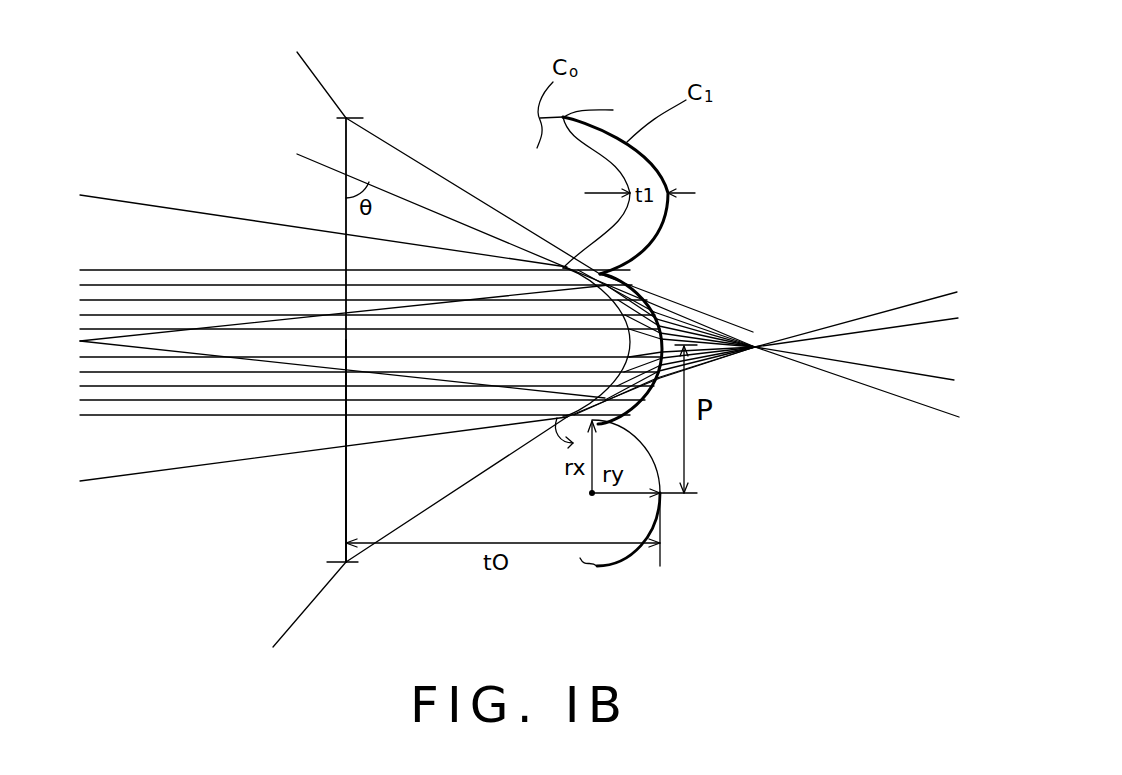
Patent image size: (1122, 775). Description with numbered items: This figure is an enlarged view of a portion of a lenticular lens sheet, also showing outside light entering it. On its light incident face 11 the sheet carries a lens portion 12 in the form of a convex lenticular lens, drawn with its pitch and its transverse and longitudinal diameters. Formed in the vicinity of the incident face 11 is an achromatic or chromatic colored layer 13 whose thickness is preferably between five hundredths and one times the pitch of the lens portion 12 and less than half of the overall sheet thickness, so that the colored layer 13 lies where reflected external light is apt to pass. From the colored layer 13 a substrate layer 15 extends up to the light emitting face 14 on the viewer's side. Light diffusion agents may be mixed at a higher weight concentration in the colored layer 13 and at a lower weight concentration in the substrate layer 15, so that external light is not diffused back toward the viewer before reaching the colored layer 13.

The light incident face 11 is at (654, 338).
The lens portion 12 is at (645, 255).
The colored layer 13 is at (652, 157).
The light emitting face 14 is at (342, 213).
The substrate layer 15 is at (370, 490).